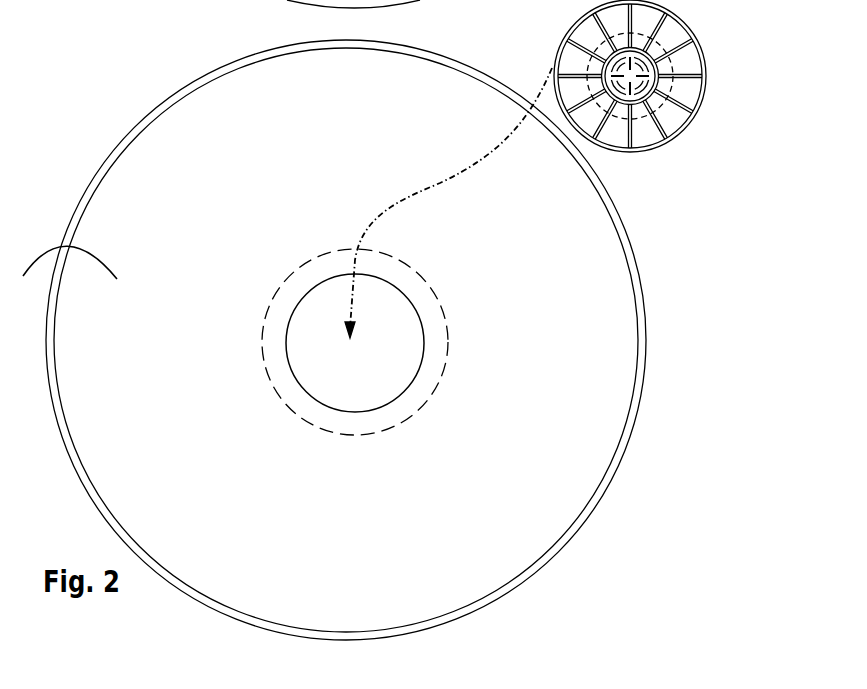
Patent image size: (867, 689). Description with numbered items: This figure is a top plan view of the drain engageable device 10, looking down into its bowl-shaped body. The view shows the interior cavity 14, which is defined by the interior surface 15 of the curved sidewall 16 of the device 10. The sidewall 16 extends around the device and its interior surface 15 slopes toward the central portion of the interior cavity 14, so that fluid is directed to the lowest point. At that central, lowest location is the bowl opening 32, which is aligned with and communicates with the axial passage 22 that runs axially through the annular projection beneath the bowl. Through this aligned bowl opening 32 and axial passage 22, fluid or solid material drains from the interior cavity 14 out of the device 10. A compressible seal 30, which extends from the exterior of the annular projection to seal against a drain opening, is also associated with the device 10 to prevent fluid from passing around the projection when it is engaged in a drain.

The drain engageable device 10 is at (123, 107).
The interior cavity 14 is at (65, 273).
The interior surface 15 is at (240, 137).
The sidewall 16 is at (78, 203).
The axial passage 22 is at (351, 361).
The compressible seal 30 is at (203, 0).
The bowl opening 32 is at (303, 300).